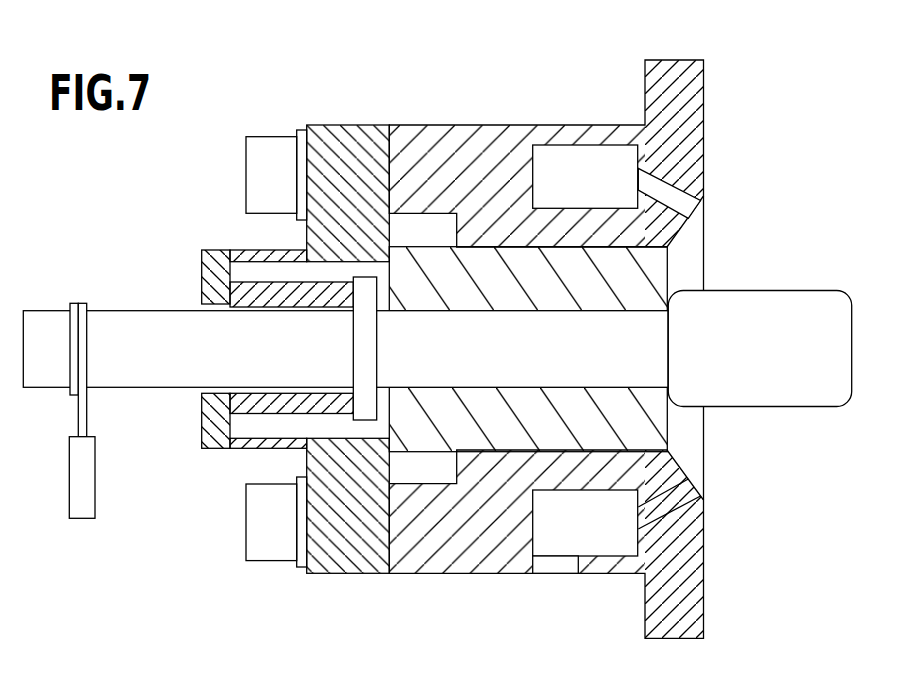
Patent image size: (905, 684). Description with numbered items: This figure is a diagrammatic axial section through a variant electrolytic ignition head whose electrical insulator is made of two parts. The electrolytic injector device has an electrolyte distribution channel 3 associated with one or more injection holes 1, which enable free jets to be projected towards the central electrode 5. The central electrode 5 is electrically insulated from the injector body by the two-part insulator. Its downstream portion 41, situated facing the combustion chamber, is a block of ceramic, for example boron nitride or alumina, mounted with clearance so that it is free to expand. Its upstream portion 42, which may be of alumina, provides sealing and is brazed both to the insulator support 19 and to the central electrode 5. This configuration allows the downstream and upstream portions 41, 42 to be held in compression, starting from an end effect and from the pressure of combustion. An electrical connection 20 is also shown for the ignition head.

The injection hole 1 is at (700, 218).
The electrolyte distribution channel 3 is at (582, 160).
The central electrode 5 is at (763, 312).
The insulator support 19 is at (318, 553).
The electrical connection 20 is at (78, 485).
The downstream portion 41 is at (660, 275).
The upstream portion 42 is at (255, 287).